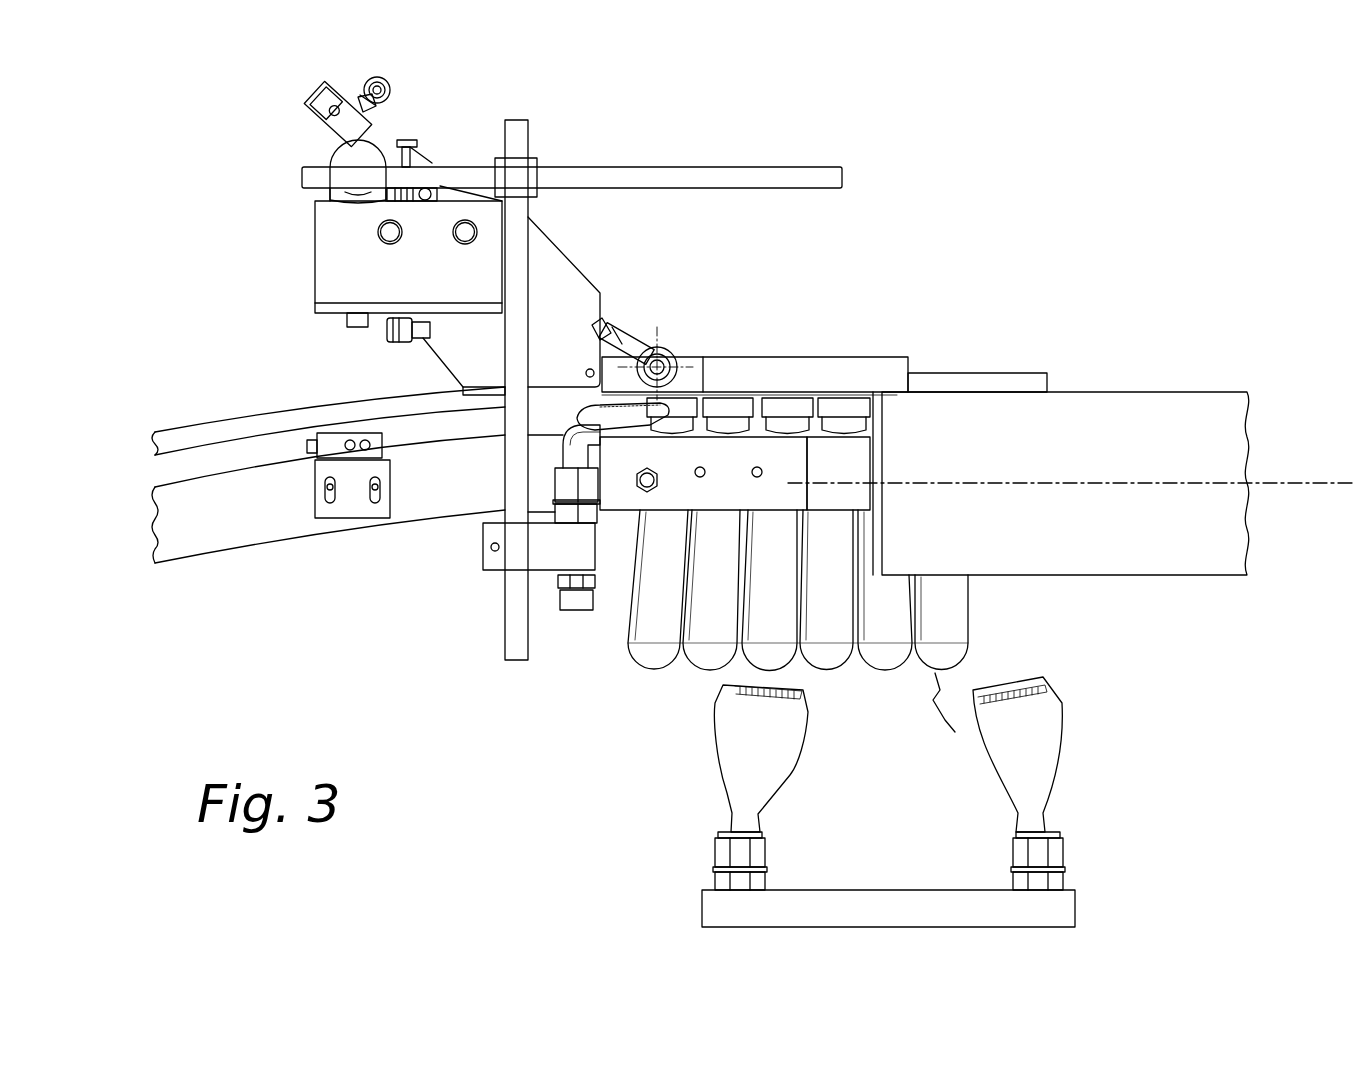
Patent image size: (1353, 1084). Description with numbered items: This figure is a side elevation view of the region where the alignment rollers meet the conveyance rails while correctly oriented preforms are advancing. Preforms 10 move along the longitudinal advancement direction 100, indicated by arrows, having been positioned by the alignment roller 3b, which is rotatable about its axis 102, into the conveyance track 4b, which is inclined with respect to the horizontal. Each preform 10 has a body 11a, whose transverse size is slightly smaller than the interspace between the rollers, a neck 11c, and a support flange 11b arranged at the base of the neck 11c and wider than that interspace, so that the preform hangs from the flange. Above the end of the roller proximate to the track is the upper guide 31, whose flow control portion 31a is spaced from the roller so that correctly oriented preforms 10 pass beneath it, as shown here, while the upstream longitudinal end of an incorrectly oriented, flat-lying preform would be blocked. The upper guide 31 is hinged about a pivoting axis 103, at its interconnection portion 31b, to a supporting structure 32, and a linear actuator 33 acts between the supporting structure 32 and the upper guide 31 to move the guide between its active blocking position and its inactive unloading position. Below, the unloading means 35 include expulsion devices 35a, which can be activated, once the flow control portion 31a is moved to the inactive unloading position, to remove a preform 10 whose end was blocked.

The alignment roller 3b is at (1170, 527).
The conveyance track 4b is at (452, 478).
The preform 10 is at (628, 673).
The body 11a is at (712, 617).
The support flange 11b is at (727, 433).
The neck 11c is at (682, 410).
The upper guide 31 is at (820, 348).
The flow control portion 31a is at (932, 373).
The interconnection portion 31b is at (685, 380).
The supporting structure 32 is at (568, 337).
The linear actuator 33 is at (370, 135).
The unloading means 35 is at (1100, 856).
The expulsion device 35a is at (757, 758).
The longitudinal advancement direction 100 is at (253, 368).
The axis 102 is at (1300, 478).
The pivoting axis 103 is at (637, 327).